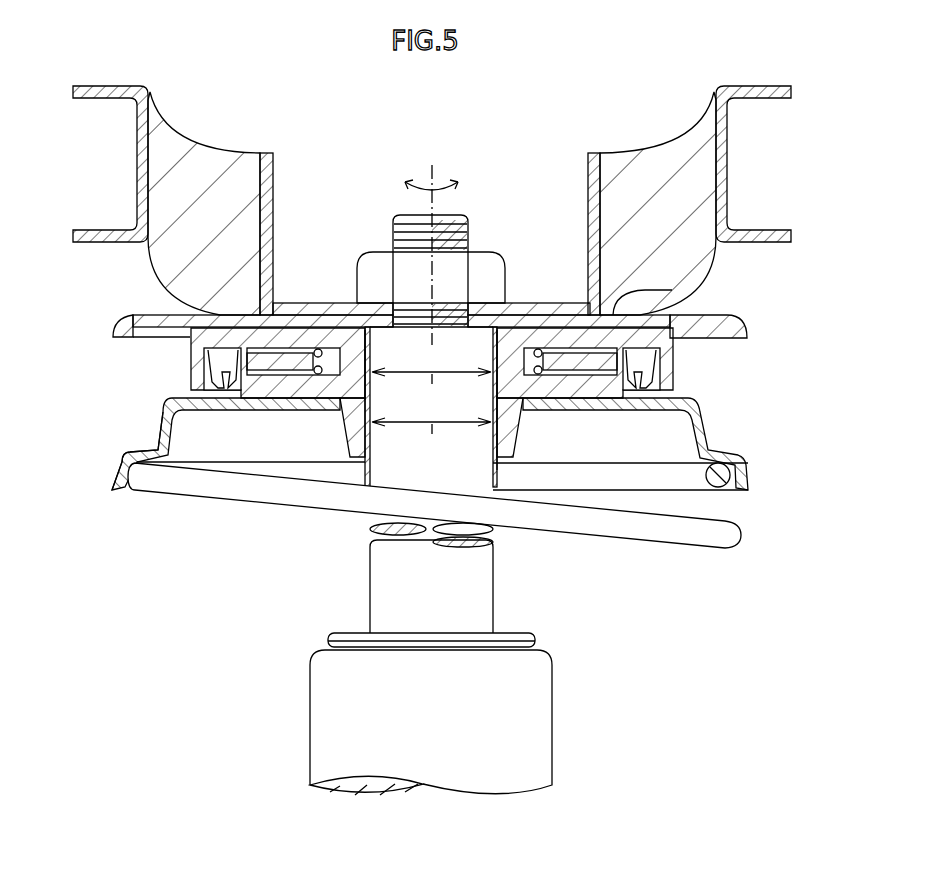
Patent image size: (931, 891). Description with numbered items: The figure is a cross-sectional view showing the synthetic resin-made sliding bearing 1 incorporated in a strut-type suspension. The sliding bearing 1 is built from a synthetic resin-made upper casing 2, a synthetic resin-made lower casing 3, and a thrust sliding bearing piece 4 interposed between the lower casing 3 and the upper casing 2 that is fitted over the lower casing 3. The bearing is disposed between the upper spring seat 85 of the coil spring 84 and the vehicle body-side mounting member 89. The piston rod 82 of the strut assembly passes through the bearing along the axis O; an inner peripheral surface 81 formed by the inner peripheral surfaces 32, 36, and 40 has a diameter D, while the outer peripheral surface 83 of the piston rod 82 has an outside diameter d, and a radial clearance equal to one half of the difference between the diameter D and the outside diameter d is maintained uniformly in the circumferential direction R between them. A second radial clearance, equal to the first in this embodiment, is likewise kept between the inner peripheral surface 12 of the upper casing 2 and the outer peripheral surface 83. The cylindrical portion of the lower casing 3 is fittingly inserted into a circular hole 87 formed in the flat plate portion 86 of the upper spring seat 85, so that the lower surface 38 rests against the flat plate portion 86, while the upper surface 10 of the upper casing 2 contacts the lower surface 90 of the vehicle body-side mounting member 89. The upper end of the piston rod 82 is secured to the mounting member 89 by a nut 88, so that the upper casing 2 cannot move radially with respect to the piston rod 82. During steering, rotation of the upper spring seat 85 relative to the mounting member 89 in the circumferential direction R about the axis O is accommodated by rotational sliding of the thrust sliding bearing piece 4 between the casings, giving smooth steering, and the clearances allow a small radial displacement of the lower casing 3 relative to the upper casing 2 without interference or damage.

The synthetic resin-made sliding bearing 1 is at (160, 373).
The upper casing 2 is at (560, 337).
The lower casing 3 is at (592, 389).
The thrust sliding bearing piece 4 is at (310, 318).
The upper surface 10 is at (673, 290).
The inner peripheral surface 12 is at (485, 330).
The inner peripheral surface 32 is at (360, 455).
The inner peripheral surface 36 is at (383, 350).
The lower surface 38 is at (623, 406).
The inner peripheral surface 40 is at (493, 430).
The inner peripheral surface 81 is at (358, 488).
The piston rod 82 is at (463, 607).
The outer peripheral surface 83 is at (402, 598).
The coil spring 84 is at (208, 480).
The upper spring seat 85 is at (167, 430).
The flat plate portion 86 is at (248, 404).
The circular hole 87 is at (523, 410).
The nut 88 is at (413, 273).
The vehicle body-side mounting member 89 is at (160, 322).
The lower surface 90 is at (336, 348).
The axis O is at (434, 170).
The circumferential direction R is at (462, 186).
The diameter D is at (431, 389).
The outside diameter d is at (431, 439).